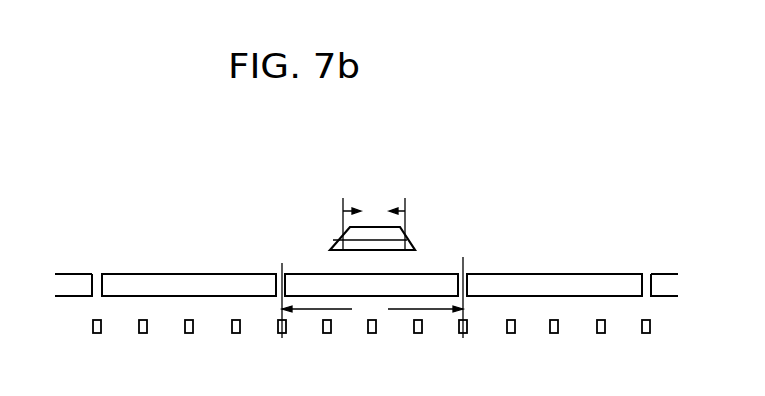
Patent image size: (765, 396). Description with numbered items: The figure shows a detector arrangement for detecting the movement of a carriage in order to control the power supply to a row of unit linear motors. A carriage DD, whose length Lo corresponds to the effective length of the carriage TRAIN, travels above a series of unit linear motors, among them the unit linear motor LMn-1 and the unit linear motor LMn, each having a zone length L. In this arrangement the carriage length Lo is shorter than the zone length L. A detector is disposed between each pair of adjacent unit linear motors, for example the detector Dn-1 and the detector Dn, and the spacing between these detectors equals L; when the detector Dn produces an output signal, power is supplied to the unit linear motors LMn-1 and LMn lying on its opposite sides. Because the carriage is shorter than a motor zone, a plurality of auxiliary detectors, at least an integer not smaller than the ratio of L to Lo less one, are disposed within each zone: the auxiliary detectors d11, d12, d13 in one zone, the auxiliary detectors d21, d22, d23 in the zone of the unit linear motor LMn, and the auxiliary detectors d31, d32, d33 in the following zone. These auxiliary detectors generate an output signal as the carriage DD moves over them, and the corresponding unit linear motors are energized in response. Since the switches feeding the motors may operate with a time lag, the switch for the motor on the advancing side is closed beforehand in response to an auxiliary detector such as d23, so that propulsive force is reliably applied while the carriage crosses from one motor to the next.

The carriage train TRAIN is at (398, 231).
The carriage DD is at (385, 245).
The carriage length Lo is at (374, 219).
The zone length of unit linear motor L is at (372, 310).
The unit linear motor LMn-1 is at (189, 285).
The unit linear motor LMn is at (371, 285).
The detector Dn-1 is at (96, 341).
The detector Dn is at (286, 341).
The auxiliary detector d11 is at (143, 334).
The auxiliary detector d12 is at (191, 341).
The auxiliary detector d13 is at (236, 334).
The auxiliary detector d21 is at (327, 334).
The auxiliary detector d22 is at (370, 341).
The auxiliary detector d23 is at (418, 334).
The auxiliary detector d31 is at (511, 334).
The auxiliary detector d32 is at (561, 341).
The auxiliary detector d33 is at (601, 334).